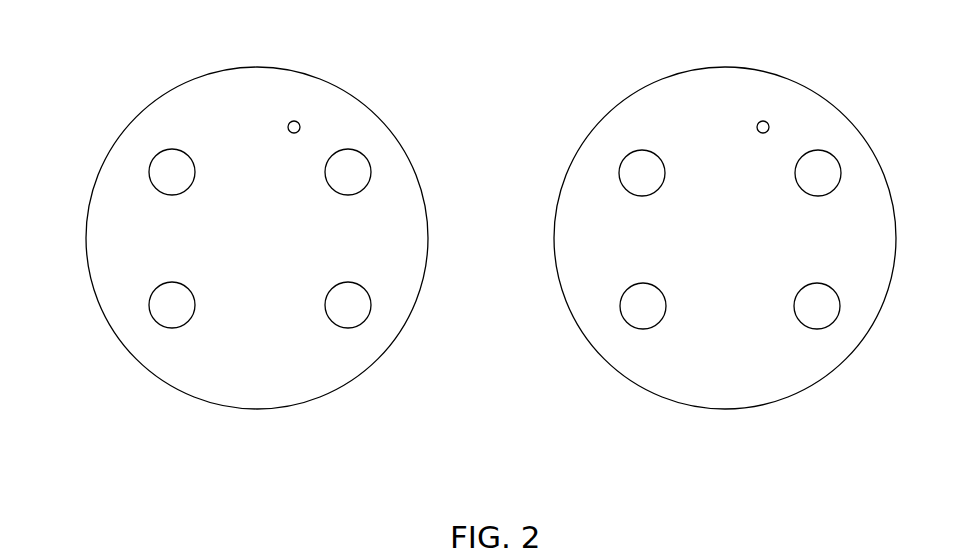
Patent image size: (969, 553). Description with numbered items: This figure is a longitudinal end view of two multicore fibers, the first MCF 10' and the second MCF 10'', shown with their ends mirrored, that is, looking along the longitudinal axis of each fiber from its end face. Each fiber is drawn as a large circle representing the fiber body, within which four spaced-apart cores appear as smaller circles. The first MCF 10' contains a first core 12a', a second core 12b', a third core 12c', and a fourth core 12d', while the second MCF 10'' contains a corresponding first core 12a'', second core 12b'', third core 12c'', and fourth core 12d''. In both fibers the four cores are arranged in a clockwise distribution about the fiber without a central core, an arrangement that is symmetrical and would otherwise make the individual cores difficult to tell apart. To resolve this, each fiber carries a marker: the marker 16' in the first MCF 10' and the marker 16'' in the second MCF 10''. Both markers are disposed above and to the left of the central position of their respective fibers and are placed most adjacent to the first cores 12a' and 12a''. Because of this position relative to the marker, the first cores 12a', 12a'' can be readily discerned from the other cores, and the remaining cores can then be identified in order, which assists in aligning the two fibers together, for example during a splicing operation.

The first MCF 10' is at (257, 218).
The marker 16' is at (339, 83).
The first core 12a' is at (398, 146).
The second core 12b' is at (397, 340).
The third core 12c' is at (130, 352).
The fourth core 12d' is at (111, 155).
The second MCF 10'' is at (725, 218).
The marker 16'' is at (827, 87).
The first core 12a'' is at (873, 156).
The second core 12b'' is at (868, 340).
The third core 12c'' is at (620, 357).
The fourth core 12d'' is at (594, 155).